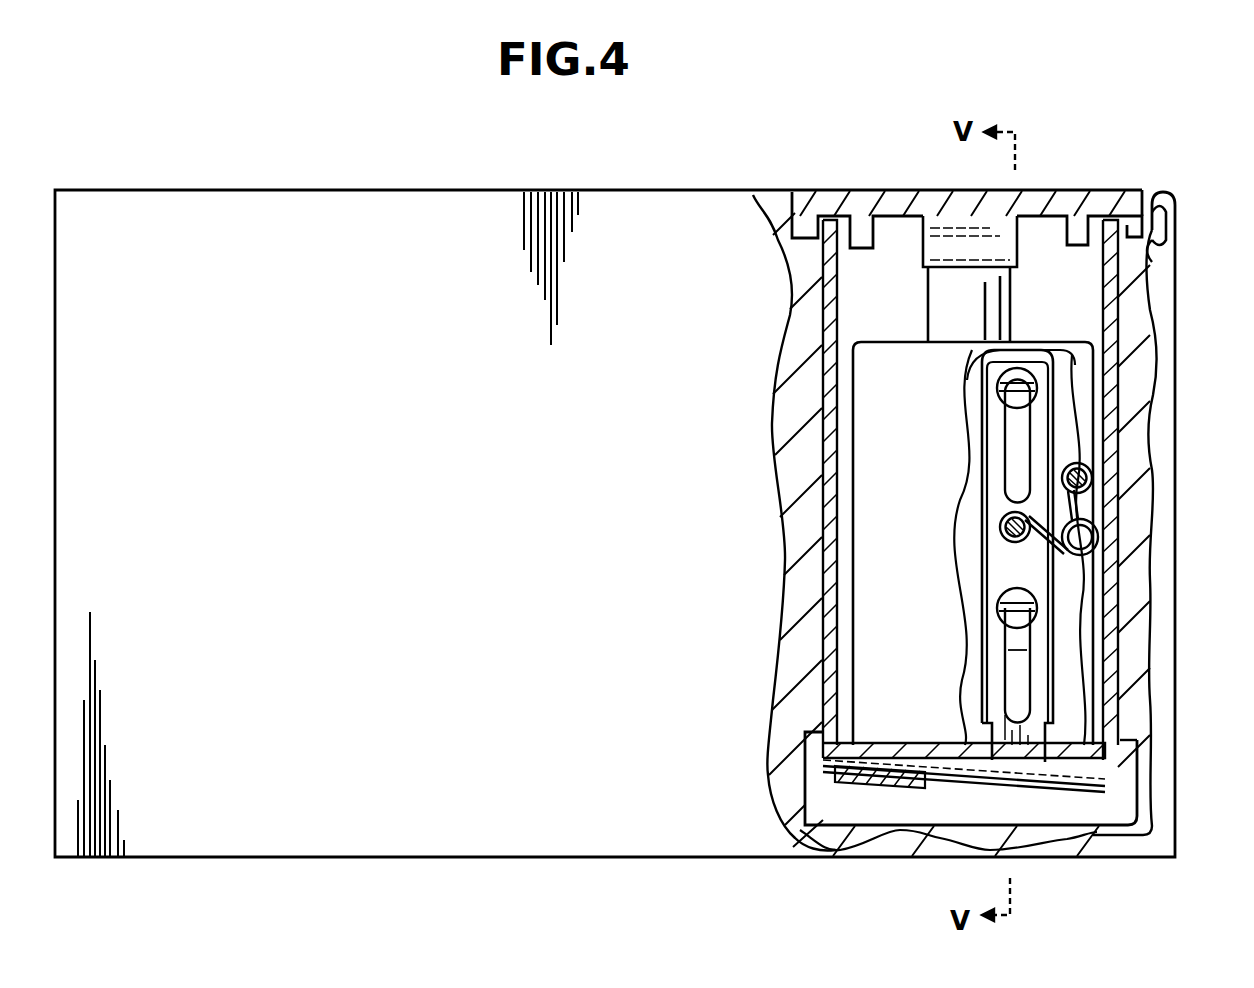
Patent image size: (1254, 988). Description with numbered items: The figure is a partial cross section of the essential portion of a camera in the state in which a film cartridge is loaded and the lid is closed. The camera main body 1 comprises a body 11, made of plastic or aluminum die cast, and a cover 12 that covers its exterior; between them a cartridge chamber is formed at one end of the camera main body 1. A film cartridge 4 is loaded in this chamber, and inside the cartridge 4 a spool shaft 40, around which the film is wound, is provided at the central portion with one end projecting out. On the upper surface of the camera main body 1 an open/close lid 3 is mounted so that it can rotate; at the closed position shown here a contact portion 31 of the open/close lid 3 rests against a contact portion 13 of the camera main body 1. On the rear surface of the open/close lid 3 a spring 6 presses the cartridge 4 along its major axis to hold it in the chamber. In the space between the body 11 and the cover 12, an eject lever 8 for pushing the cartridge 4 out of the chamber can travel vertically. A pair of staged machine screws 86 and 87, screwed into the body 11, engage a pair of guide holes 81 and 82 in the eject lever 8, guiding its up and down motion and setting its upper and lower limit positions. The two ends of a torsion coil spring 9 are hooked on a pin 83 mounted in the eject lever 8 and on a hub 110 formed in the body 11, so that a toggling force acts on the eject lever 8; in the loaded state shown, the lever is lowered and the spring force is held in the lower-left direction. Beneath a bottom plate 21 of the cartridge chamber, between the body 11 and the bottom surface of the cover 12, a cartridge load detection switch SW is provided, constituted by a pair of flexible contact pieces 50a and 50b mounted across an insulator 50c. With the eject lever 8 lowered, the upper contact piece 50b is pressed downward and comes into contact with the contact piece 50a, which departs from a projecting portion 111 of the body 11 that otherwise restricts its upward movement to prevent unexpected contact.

The camera main body 1 is at (620, 190).
The open/close lid 3 is at (1040, 192).
The film cartridge 4 is at (890, 342).
The spring 6 is at (940, 238).
The eject lever 8 is at (985, 416).
The torsion coil spring 9 is at (1097, 528).
The body 11 is at (1120, 280).
The cover 12 is at (1177, 342).
The contact portion 13 is at (1133, 215).
The bottom plate 21 is at (884, 743).
The contact portion 31 is at (1160, 245).
The spool shaft 40 is at (1003, 298).
The contact piece 50a is at (915, 786).
The contact piece 50b is at (958, 745).
The insulator 50c is at (823, 780).
The guide hole 81 is at (1018, 690).
The guide hole 82 is at (1022, 446).
The pin 83 is at (1000, 525).
The staged machine screw 86 is at (1000, 604).
The staged machine screw 87 is at (1000, 393).
The hub 110 is at (1092, 478).
The projecting portion 111 is at (1150, 780).
The cartridge load detection switch SW is at (1100, 790).